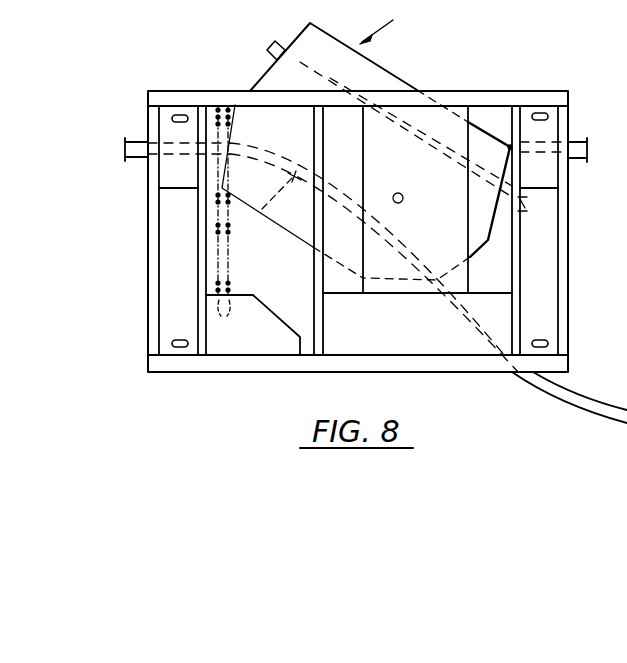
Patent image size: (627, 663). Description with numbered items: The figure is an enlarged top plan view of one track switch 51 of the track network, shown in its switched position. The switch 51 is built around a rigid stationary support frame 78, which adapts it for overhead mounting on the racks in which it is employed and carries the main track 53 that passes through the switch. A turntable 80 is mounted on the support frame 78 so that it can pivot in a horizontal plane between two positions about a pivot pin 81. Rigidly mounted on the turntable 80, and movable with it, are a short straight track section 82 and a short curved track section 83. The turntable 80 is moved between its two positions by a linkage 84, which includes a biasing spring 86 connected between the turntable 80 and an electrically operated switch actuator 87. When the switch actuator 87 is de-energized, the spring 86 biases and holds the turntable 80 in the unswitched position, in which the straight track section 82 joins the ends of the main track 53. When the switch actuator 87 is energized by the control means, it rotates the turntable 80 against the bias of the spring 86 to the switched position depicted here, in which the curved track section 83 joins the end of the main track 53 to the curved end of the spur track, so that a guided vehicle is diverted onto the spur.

The switch 51 is at (528, 74).
The main track 53 is at (138, 141).
The support frame 78 is at (571, 87).
The turntable 80 is at (398, 79).
The pivot pin 81 is at (403, 199).
The straight track section 82 is at (283, 43).
The curved track section 83 is at (259, 212).
The linkage 84 is at (233, 269).
The biasing spring 86 is at (233, 286).
The switch actuator 87 is at (266, 342).